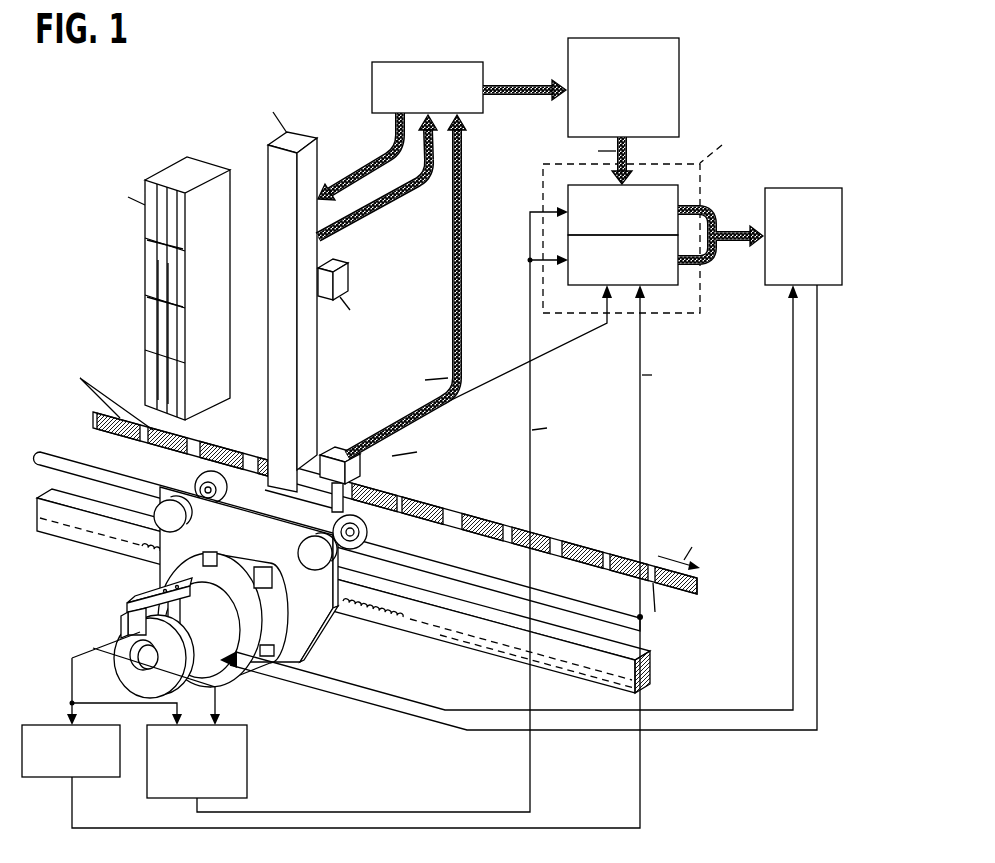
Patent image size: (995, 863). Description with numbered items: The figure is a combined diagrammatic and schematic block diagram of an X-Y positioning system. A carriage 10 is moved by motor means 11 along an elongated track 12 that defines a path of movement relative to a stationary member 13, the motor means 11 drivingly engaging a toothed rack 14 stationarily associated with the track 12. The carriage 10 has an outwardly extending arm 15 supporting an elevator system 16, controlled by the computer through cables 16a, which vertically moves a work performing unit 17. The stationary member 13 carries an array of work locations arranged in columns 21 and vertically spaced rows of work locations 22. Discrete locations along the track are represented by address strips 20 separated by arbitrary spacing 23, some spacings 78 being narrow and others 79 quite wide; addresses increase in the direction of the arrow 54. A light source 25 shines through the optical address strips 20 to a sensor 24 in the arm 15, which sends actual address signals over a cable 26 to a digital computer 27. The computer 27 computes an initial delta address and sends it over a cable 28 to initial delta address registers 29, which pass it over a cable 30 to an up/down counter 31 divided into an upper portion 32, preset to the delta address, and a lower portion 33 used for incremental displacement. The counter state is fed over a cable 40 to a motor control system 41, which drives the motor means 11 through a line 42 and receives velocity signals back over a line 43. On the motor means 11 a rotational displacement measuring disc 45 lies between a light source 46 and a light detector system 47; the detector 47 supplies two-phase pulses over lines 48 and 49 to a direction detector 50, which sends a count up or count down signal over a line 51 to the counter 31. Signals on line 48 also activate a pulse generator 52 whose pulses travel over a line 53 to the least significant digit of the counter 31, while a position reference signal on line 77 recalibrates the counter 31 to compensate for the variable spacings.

The carriage 10 is at (316, 613).
The motor means 11 is at (226, 623).
The elongated track 12 is at (474, 574).
The stationary member 13 is at (136, 277).
The toothed rack 14 is at (477, 650).
The arm 15 is at (262, 502).
The elevator system 16 is at (268, 152).
The cables 16a is at (373, 172).
The work performing unit 17 is at (350, 267).
The address strips 20 is at (143, 450).
The columns 21 is at (185, 250).
The rows of work locations 22 is at (186, 385).
The spacing 23 is at (603, 553).
The sensor 24 is at (300, 524).
The light source 25 is at (347, 453).
The cable 26 is at (462, 245).
The digital computer 27 is at (425, 62).
The cable 28 is at (503, 84).
The initial delta address registers 29 is at (680, 55).
The cable 30 is at (629, 151).
The up/down counter 31 is at (702, 183).
The upper portion 32 is at (568, 192).
The lower portion 33 is at (584, 286).
The cable 40 is at (738, 243).
The motor control system 41 is at (820, 188).
The line 42 is at (780, 730).
The line 43 is at (710, 710).
The rotational displacement measuring disc 45 is at (130, 670).
The light source 46 is at (160, 623).
The light detector system 47 is at (128, 625).
The line 48 is at (93, 648).
The line 49 is at (112, 660).
The direction detector 50 is at (248, 763).
The line 51 is at (533, 472).
The pulse generator 52 is at (55, 724).
The line 53 is at (642, 445).
The arrow 54 is at (672, 555).
The line 77 is at (510, 370).
The spacings 78 is at (398, 500).
The spacings 79 is at (248, 463).